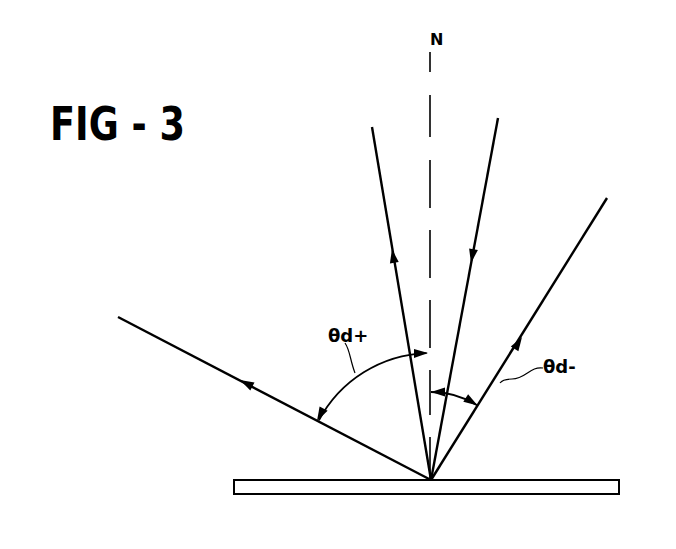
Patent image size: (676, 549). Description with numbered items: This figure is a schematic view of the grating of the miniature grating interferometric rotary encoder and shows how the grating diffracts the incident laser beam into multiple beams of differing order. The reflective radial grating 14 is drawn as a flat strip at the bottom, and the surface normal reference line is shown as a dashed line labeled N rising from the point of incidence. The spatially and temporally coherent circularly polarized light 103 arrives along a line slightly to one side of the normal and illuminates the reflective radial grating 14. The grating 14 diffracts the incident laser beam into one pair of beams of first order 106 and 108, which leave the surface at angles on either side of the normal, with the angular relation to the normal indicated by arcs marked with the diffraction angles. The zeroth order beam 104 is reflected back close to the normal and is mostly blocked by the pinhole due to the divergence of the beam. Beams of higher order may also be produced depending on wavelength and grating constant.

The zeroth order beam 104 is at (373, 145).
The spatially and temporally coherent circularly polarized light 103 is at (493, 131).
The first order beam 108 is at (597, 208).
The first order beam 106 is at (132, 322).
The reflective radial grating 14 is at (597, 480).